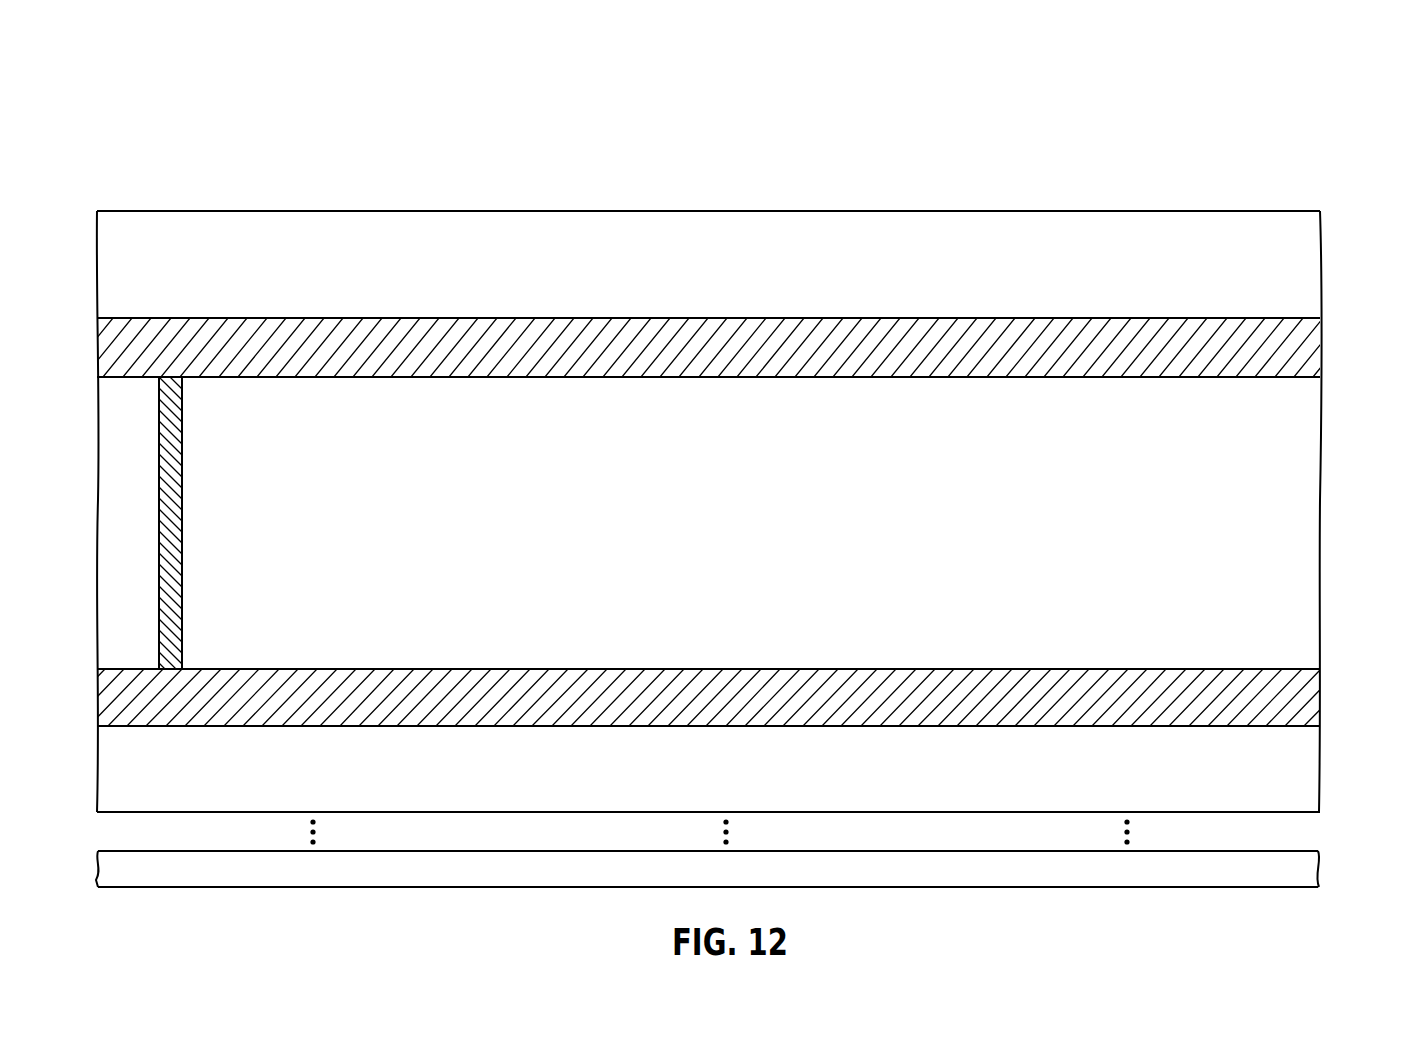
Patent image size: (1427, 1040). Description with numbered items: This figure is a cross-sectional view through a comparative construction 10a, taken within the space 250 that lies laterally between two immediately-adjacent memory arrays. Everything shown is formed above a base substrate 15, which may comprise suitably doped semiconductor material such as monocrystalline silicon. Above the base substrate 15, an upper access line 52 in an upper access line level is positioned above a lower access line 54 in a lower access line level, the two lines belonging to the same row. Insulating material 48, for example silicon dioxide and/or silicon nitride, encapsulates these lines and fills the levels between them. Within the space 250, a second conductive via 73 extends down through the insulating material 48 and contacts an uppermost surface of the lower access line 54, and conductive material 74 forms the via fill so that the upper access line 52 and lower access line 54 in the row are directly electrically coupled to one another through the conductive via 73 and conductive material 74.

The construction 10a is at (1313, 112).
The space 250 is at (812, 162).
The insulating material 48 is at (1172, 280).
The upper access line 52 is at (729, 316).
The lower access line 54 is at (728, 666).
The second conductive via 73 is at (184, 456).
The conductive material 74 is at (176, 549).
The base substrate 15 is at (1273, 878).